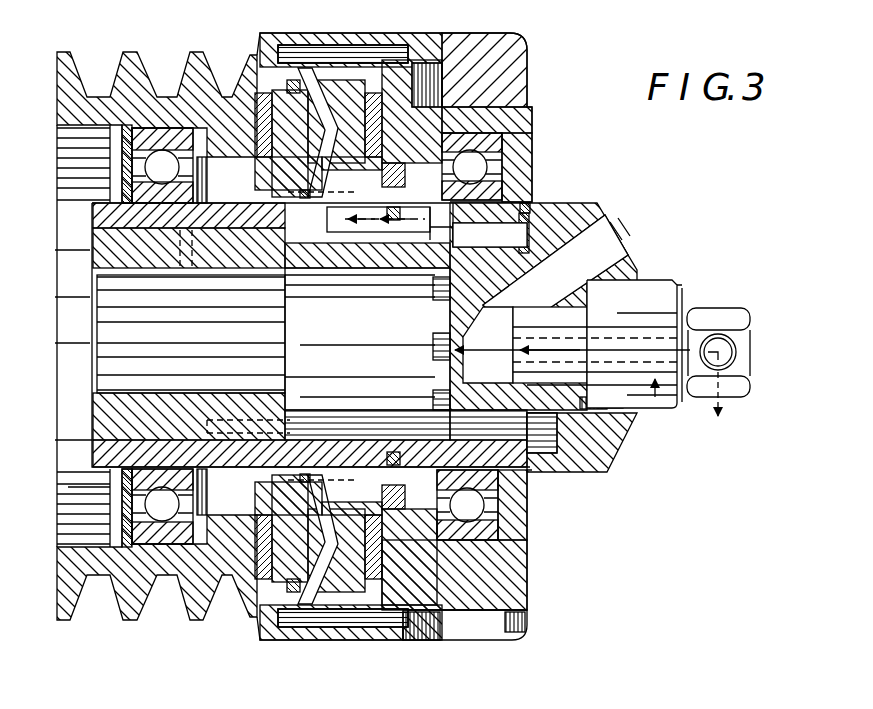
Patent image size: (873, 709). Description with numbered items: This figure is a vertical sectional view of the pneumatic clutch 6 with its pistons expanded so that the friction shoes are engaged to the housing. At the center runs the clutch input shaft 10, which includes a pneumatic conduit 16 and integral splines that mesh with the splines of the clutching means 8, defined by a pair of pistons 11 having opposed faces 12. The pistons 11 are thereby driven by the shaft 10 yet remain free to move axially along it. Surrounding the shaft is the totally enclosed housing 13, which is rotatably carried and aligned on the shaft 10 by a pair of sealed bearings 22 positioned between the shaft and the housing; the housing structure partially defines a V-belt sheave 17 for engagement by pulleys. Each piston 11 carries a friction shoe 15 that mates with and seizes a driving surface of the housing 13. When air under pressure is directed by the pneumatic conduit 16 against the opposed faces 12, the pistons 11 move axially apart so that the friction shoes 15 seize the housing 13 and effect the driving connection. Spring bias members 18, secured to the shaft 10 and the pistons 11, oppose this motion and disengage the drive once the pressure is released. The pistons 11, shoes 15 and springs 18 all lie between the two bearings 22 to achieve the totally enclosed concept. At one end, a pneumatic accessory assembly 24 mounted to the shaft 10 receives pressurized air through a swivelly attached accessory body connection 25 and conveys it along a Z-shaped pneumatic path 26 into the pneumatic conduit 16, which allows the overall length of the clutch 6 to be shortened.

The pneumatic clutch 6 is at (580, 111).
The clutching means 8 is at (355, 66).
The clutch input shaft 10 is at (333, 253).
The pistons 11 is at (305, 150).
The opposed faces 12 is at (330, 80).
The totally enclosed housing 13 is at (197, 73).
The friction shoe 15 is at (262, 68).
The pneumatic conduit 16 is at (520, 240).
The V-belt sheave 17 is at (75, 87).
The spring bias members 18 is at (500, 83).
The sealed bearings 22 is at (130, 195).
The pneumatic accessory assembly 24 is at (648, 248).
The accessory body connection 25 is at (690, 318).
The Z-shaped pneumatic path 26 is at (555, 220).